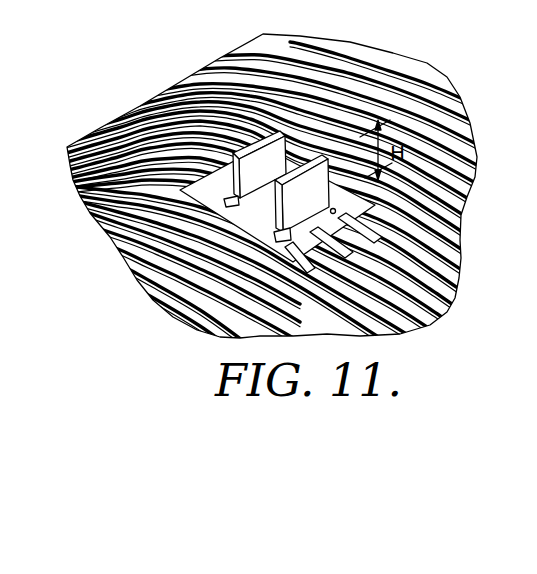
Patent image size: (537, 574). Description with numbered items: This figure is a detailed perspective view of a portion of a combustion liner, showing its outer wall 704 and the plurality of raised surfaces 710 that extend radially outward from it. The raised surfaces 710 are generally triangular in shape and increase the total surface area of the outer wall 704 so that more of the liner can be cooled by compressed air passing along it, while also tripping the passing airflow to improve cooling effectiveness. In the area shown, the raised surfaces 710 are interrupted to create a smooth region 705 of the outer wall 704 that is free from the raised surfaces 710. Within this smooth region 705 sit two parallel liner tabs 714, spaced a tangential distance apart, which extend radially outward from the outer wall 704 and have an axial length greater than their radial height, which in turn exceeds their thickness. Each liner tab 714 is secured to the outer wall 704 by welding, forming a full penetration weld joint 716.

The outer wall 704 is at (430, 326).
The smooth region 705 is at (263, 212).
The raised surfaces 710 is at (458, 222).
The liner tabs 714 is at (297, 192).
The full penetration weld joint 716 is at (274, 233).